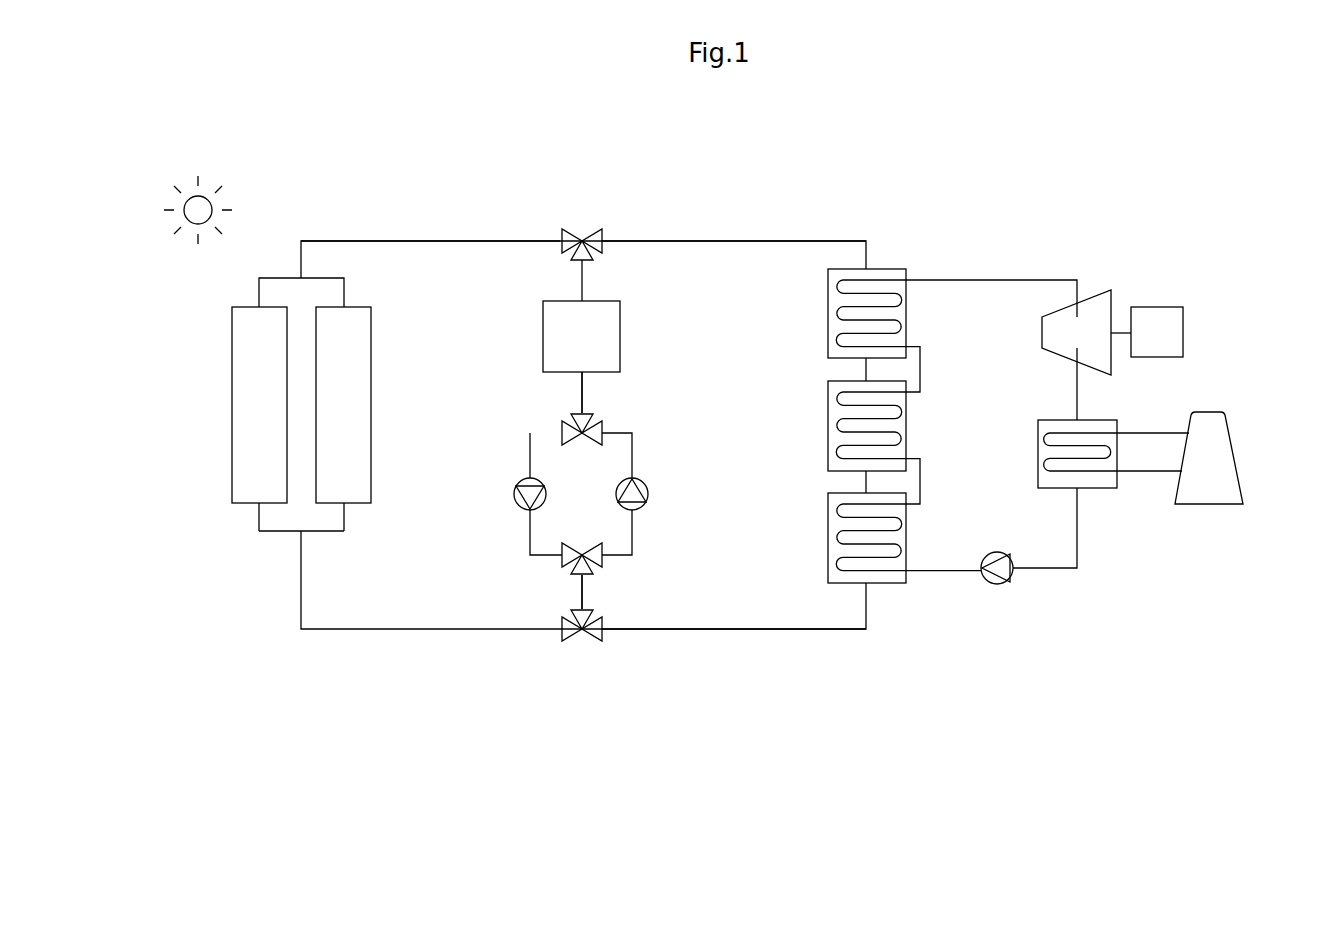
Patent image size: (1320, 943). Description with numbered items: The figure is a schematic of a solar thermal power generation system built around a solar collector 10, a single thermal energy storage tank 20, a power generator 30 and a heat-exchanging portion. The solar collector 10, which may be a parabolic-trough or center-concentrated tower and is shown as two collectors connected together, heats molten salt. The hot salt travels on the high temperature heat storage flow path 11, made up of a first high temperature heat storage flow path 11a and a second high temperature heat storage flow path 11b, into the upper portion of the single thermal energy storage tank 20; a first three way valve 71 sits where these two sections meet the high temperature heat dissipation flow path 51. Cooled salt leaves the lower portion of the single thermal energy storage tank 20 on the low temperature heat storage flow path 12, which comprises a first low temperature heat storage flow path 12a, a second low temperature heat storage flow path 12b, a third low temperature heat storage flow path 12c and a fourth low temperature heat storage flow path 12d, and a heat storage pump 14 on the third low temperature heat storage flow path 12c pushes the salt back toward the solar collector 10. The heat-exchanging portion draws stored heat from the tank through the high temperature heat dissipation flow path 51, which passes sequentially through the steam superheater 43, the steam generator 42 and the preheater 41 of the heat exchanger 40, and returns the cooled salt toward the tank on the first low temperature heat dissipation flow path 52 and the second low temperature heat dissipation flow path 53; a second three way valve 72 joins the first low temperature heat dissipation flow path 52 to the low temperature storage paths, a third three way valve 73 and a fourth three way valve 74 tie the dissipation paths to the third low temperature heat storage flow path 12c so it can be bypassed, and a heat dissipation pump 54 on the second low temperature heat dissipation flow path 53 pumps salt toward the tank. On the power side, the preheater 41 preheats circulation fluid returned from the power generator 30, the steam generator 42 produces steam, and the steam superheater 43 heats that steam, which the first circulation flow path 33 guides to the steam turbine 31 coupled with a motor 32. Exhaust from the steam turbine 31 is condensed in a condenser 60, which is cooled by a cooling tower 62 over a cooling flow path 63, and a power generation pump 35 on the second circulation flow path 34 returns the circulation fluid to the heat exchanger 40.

The solar collector 10 is at (222, 491).
The high temperature heat storage flow path 11 is at (437, 297).
The first high temperature heat storage flow path 11a is at (481, 242).
The second high temperature heat storage flow path 11b is at (578, 276).
The low temperature heat storage flow path 12 is at (462, 399).
The first low temperature heat storage flow path 12a is at (456, 629).
The second low temperature heat storage flow path 12b is at (582, 598).
The third low temperature heat storage flow path 12c is at (530, 466).
The fourth low temperature heat storage flow path 12d is at (578, 392).
The heat storage pump 14 is at (547, 492).
The single thermal energy storage tank 20 is at (621, 336).
The power generator 30 is at (1044, 310).
The steam turbine 31 is at (1101, 290).
The motor 32 is at (1097, 238).
The first circulation flow path 33 is at (953, 280).
The second circulation flow path 34 is at (1046, 572).
The power generation pump 35 is at (993, 585).
The heat exchanger 40 is at (820, 426).
The preheater 41 is at (837, 527).
The steam generator 42 is at (826, 422).
The steam superheater 43 is at (826, 320).
The high temperature heat dissipation flow path 51 is at (711, 240).
The first low temperature heat dissipation flow path 52 is at (754, 632).
The second low temperature heat dissipation flow path 53 is at (634, 541).
The heat dissipation pump 54 is at (648, 497).
The condenser 60 is at (1143, 473).
The cooling tower 62 is at (1228, 441).
The cooling flow path 63 is at (1153, 433).
The first three way valve 71 is at (583, 226).
The second three way valve 72 is at (572, 641).
The third three way valve 73 is at (600, 562).
The fourth three way valve 74 is at (604, 425).